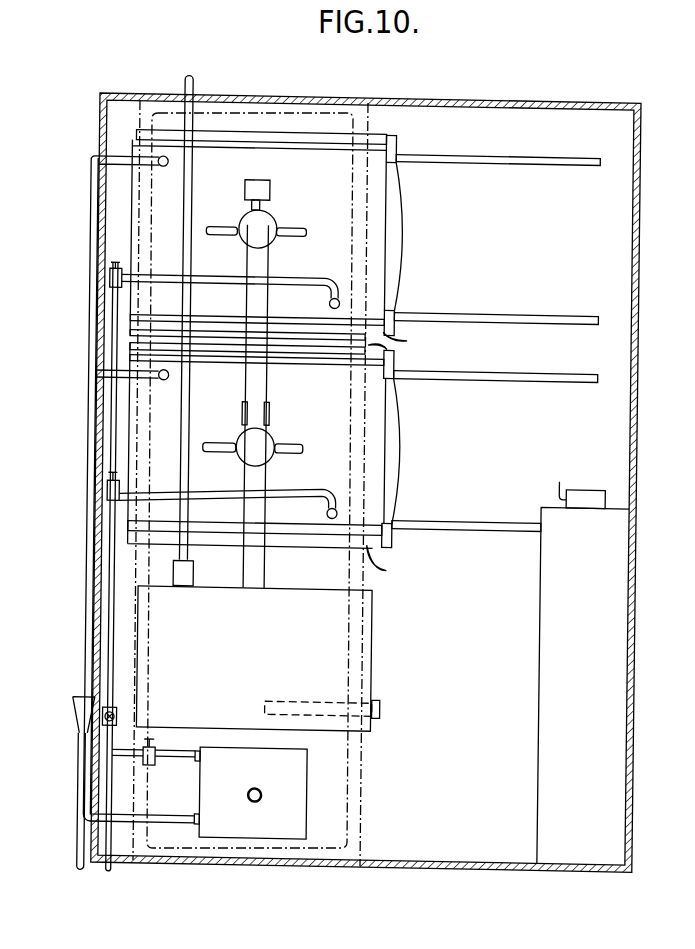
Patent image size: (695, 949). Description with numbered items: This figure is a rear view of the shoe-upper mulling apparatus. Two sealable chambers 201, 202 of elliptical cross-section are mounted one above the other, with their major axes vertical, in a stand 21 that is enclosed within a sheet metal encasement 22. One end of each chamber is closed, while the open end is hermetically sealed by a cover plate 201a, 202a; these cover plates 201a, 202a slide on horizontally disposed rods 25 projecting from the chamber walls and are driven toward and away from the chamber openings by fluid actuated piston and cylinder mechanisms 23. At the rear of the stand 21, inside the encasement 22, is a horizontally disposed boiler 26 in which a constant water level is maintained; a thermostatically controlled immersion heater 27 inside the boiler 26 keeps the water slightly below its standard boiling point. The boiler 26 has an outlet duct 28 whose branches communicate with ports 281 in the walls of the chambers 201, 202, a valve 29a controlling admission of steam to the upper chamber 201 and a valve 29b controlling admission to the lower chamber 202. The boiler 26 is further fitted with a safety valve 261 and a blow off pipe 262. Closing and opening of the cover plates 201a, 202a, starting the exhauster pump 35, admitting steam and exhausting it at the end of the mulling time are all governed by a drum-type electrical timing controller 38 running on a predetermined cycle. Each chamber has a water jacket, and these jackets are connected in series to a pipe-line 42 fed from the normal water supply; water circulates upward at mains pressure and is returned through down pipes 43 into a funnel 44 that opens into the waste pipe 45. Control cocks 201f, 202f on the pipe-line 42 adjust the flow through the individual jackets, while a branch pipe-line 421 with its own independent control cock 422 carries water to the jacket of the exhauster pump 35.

The stand 21 is at (362, 789).
The sheet metal encasement 22 is at (634, 221).
The fluid actuated piston and cylinder mechanisms 23 is at (398, 461).
The horizontally disposed rods 25 is at (555, 156).
The boiler 26 is at (260, 662).
The thermostatically controlled immersion heater 27 is at (388, 698).
The outlet duct 28 is at (249, 256).
The valve 29a is at (262, 186).
The valve 29b is at (273, 410).
The exhauster pump 35 is at (272, 772).
The electrical timing controller 38 is at (589, 481).
The pipe-line 42 is at (324, 280).
The down pipes 43 is at (91, 214).
The funnel 44 is at (80, 713).
The waste pipe 45 is at (82, 832).
The upper sealable chamber 201 is at (232, 188).
The cover plate 201a is at (399, 221).
The control cock 201f is at (112, 280).
The lower sealable chamber 202 is at (236, 394).
The cover plate 202a is at (399, 466).
The control cock 202f is at (112, 487).
The safety valve 261 is at (201, 563).
The blow off pipe 262 is at (194, 76).
The ports 281 is at (296, 224).
The branch pipe-line 421 is at (184, 748).
The control cock 422 is at (156, 737).